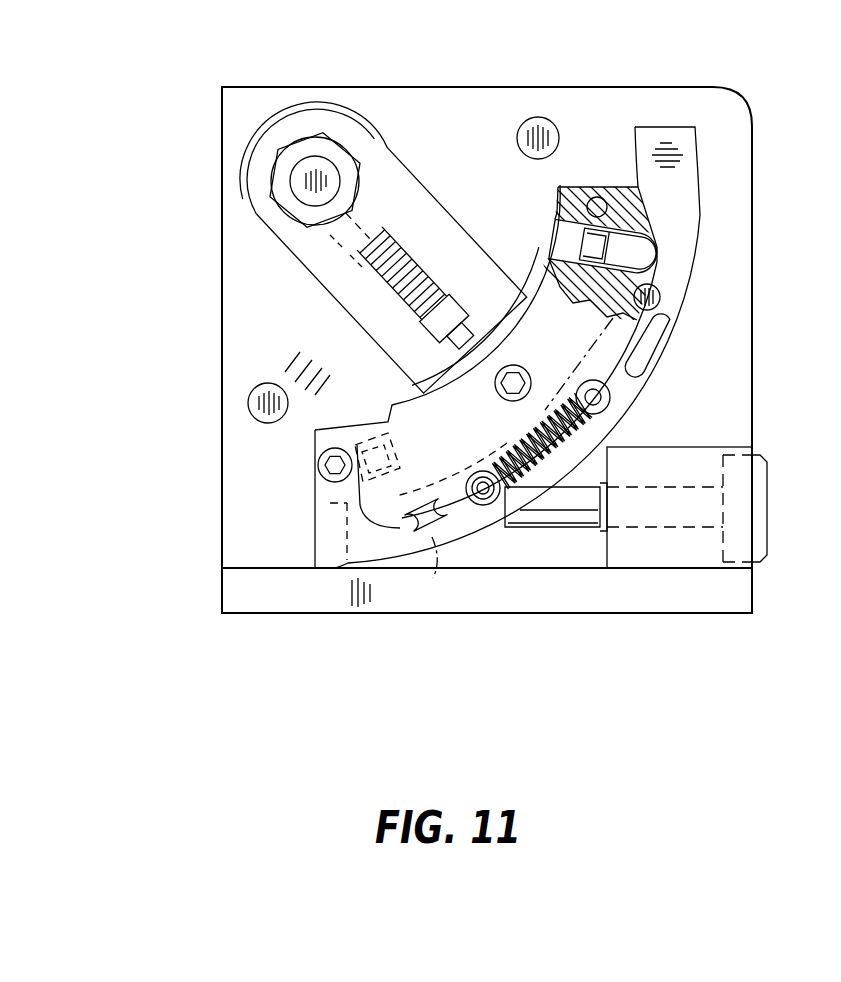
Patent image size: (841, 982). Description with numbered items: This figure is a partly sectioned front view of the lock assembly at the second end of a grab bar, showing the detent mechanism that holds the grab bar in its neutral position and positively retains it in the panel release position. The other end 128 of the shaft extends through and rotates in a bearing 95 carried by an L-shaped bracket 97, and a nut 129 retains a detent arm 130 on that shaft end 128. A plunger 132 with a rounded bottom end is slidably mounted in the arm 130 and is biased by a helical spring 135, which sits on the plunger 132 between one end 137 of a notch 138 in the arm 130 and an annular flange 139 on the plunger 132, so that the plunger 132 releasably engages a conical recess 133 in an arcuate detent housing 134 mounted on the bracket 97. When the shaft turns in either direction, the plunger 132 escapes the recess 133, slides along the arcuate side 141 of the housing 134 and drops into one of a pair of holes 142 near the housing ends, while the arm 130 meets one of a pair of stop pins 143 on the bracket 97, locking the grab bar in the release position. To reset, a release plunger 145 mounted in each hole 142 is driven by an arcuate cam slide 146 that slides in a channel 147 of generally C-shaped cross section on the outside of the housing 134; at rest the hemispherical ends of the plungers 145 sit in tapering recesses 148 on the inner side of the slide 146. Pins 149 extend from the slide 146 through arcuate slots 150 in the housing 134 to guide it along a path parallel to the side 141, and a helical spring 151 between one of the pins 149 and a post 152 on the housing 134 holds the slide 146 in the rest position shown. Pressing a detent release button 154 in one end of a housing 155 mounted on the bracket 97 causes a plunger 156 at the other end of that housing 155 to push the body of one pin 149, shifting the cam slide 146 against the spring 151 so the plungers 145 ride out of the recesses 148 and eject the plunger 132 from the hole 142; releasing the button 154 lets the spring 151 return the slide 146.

The bearing 95 is at (320, 102).
The L-shaped bracket 97 is at (752, 613).
The other end of shaft 128 is at (290, 181).
The nut 129 is at (297, 140).
The detent arm 130 is at (410, 198).
The plunger 132 is at (427, 345).
The conical recess 133 is at (495, 385).
The arcuate detent housing 134 is at (527, 349).
The helical spring 135 is at (441, 262).
The end of notch 137 is at (347, 281).
The notch 138 is at (350, 312).
The annular flange 139 is at (442, 312).
The arcuate side 141 is at (410, 412).
The holes 142 is at (572, 198).
The stop pins 143 is at (540, 118).
The release plunger 145 is at (659, 253).
The arcuate cam slide 146 is at (660, 135).
The channel 147 is at (318, 530).
The tapering recesses 148 is at (702, 203).
The pins 149 is at (660, 297).
The arcuate slots 150 is at (656, 345).
The helical spring 151 is at (590, 430).
The post 152 is at (610, 393).
The detent release button 154 is at (767, 507).
The housing 155 is at (668, 548).
The plunger 156 is at (565, 520).